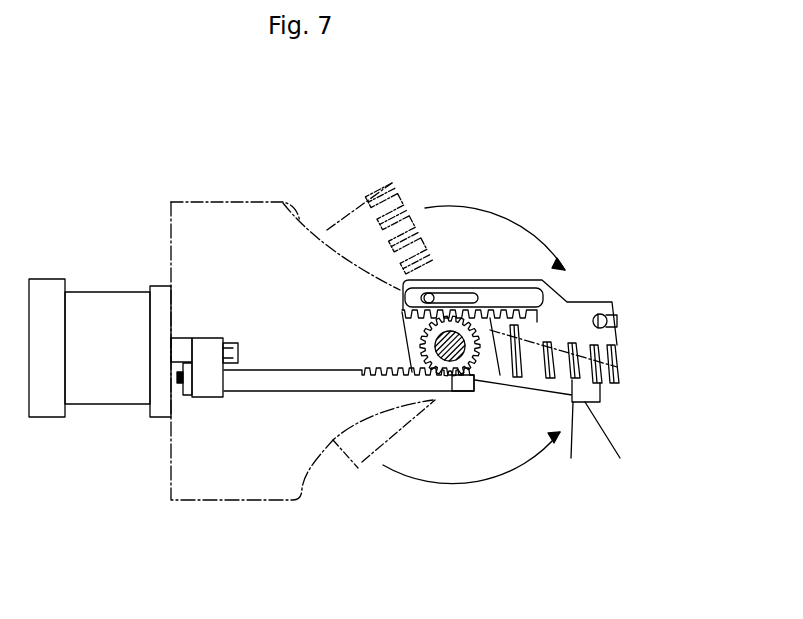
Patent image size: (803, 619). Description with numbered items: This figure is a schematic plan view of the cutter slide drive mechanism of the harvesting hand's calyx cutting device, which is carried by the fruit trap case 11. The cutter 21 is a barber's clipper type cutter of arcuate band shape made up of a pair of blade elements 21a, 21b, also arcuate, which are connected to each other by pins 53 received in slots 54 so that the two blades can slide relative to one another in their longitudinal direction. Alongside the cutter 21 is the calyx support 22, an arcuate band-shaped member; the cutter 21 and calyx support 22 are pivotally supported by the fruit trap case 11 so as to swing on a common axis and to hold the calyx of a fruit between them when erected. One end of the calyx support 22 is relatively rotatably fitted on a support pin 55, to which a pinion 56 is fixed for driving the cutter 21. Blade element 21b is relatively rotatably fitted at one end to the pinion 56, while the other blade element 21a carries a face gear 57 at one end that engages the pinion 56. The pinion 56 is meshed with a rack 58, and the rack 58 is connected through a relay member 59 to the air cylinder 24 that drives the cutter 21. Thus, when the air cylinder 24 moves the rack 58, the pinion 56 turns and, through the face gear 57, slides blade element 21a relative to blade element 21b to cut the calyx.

The fruit trap case 11 is at (258, 500).
The cutter 21 is at (641, 482).
The blade element 21a is at (617, 443).
The blade element 21b is at (577, 443).
The calyx support 22 is at (362, 465).
The air cylinder 24 is at (110, 295).
The pin 53 is at (425, 297).
The slot 54 is at (478, 293).
The support pin 55 is at (448, 362).
The pinion 56 is at (500, 376).
The face gear 57 is at (415, 320).
The rack 58 is at (375, 368).
The relay member 59 is at (207, 397).